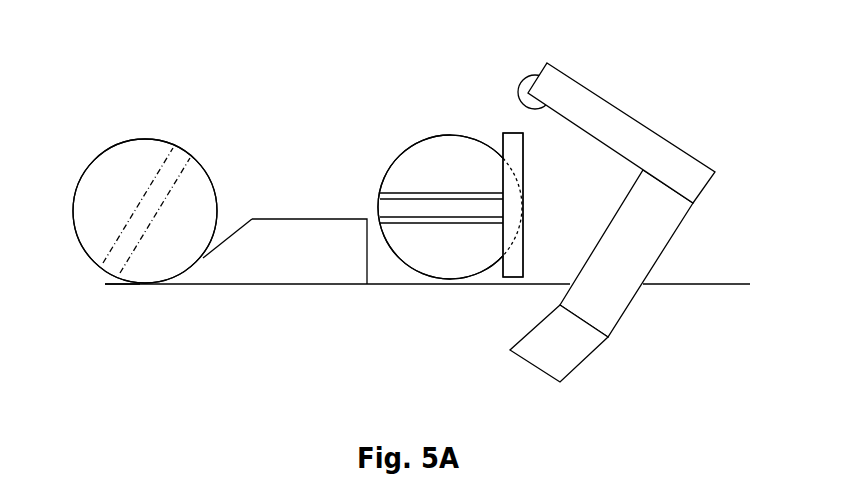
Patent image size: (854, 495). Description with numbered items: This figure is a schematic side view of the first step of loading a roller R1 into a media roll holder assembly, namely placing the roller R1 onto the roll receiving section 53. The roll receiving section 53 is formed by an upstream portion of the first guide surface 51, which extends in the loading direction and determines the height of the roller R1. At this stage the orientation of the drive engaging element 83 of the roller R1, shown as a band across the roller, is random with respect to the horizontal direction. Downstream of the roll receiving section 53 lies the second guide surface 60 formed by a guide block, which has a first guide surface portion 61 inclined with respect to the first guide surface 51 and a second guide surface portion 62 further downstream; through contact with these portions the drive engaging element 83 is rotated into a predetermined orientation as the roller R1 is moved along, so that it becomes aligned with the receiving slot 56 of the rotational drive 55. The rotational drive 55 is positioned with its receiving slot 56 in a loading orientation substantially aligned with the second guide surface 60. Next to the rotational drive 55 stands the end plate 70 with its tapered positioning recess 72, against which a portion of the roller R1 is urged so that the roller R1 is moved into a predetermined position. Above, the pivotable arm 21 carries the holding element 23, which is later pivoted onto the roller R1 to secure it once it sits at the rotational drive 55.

The pivotable arm 21 is at (630, 140).
The holding element 23 is at (545, 64).
The first guide surface 51 is at (177, 283).
The roll receiving section 53 is at (112, 285).
The rotational drive 55 is at (409, 117).
The receiving slot 56 is at (403, 207).
The second guide surface 60 is at (278, 297).
The first guide surface portion 61 is at (248, 222).
The second guide surface portion 62 is at (323, 219).
The end plate 70 is at (521, 233).
The positioning recess 72 is at (505, 273).
The drive engaging element 83 is at (158, 195).
The roller R1 is at (124, 127).